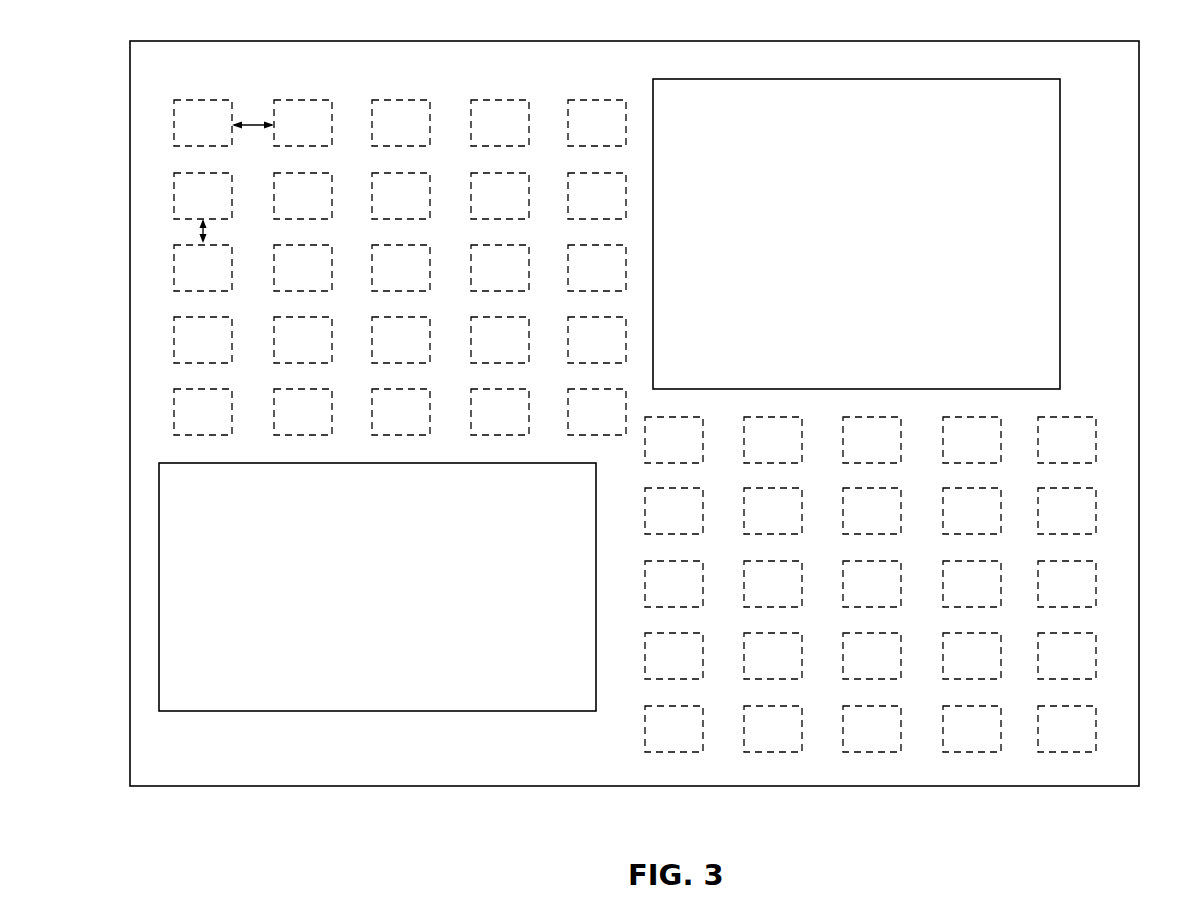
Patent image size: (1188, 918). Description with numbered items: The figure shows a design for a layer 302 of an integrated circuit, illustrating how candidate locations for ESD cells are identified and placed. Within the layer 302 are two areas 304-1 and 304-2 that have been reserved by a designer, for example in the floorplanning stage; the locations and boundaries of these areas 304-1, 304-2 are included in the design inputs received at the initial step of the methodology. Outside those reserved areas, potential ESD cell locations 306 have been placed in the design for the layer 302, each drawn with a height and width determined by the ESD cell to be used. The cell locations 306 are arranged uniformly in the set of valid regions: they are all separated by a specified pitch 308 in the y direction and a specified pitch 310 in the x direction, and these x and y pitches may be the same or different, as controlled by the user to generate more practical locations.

The layer 302 is at (311, 792).
The reserved area 304-1 is at (377, 587).
The reserved area 304-2 is at (856, 234).
The potential ESD cell locations 306 is at (495, 118).
The pitch in the y direction 308 is at (196, 227).
The pitch in the x direction 310 is at (255, 118).